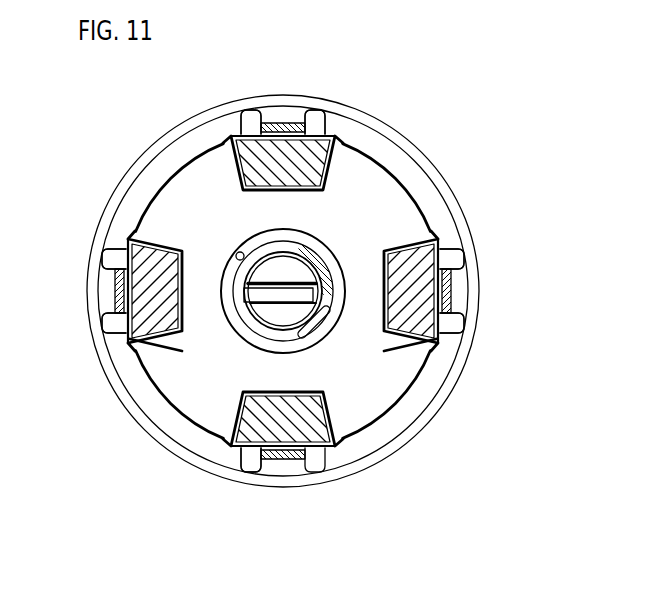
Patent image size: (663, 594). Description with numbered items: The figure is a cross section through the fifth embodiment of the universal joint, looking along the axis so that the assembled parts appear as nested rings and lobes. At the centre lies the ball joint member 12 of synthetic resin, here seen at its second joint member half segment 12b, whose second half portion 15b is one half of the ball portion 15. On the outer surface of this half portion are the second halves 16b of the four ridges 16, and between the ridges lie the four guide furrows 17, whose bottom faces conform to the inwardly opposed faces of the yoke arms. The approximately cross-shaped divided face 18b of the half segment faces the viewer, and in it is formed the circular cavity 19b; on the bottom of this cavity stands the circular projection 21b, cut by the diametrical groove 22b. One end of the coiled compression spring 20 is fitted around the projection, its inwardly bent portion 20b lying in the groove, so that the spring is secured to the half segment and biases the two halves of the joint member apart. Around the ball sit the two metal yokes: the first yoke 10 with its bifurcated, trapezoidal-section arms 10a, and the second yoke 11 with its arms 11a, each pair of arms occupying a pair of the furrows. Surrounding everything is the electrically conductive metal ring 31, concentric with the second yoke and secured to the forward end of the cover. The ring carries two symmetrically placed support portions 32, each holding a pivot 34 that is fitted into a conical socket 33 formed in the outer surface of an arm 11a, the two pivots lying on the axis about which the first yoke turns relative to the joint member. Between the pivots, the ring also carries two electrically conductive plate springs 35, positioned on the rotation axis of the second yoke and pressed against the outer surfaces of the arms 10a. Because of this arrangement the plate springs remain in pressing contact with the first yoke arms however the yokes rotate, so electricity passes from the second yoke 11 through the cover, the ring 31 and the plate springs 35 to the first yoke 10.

The first yoke 10 is at (320, 110).
The arms of the first yoke 10a is at (252, 110).
The second yoke 11 is at (108, 322).
The arms of the second yoke 11a is at (448, 372).
The ball joint member 12 is at (401, 170).
The second joint member half segment 12b is at (160, 180).
The ball portion 15 is at (250, 135).
The second half portion 15b is at (322, 450).
The ridges 16 is at (270, 288).
The second halves of the ridges 16b is at (270, 313).
The guide furrows 17 is at (285, 282).
The divided face of the second half segment 18b is at (188, 404).
The circular cavity 19b is at (238, 254).
The coiled compression spring 20 is at (283, 244).
The bent portion of the spring 20b is at (283, 296).
The circular projection 21b is at (294, 262).
The diametrical groove 22b is at (316, 294).
The electrically conductive metal ring 31 is at (150, 140).
The support portions 32 is at (106, 256).
The conical socket 33 is at (165, 336).
The pivot 34 is at (106, 292).
The electrically conductive plate springs 35 is at (288, 123).